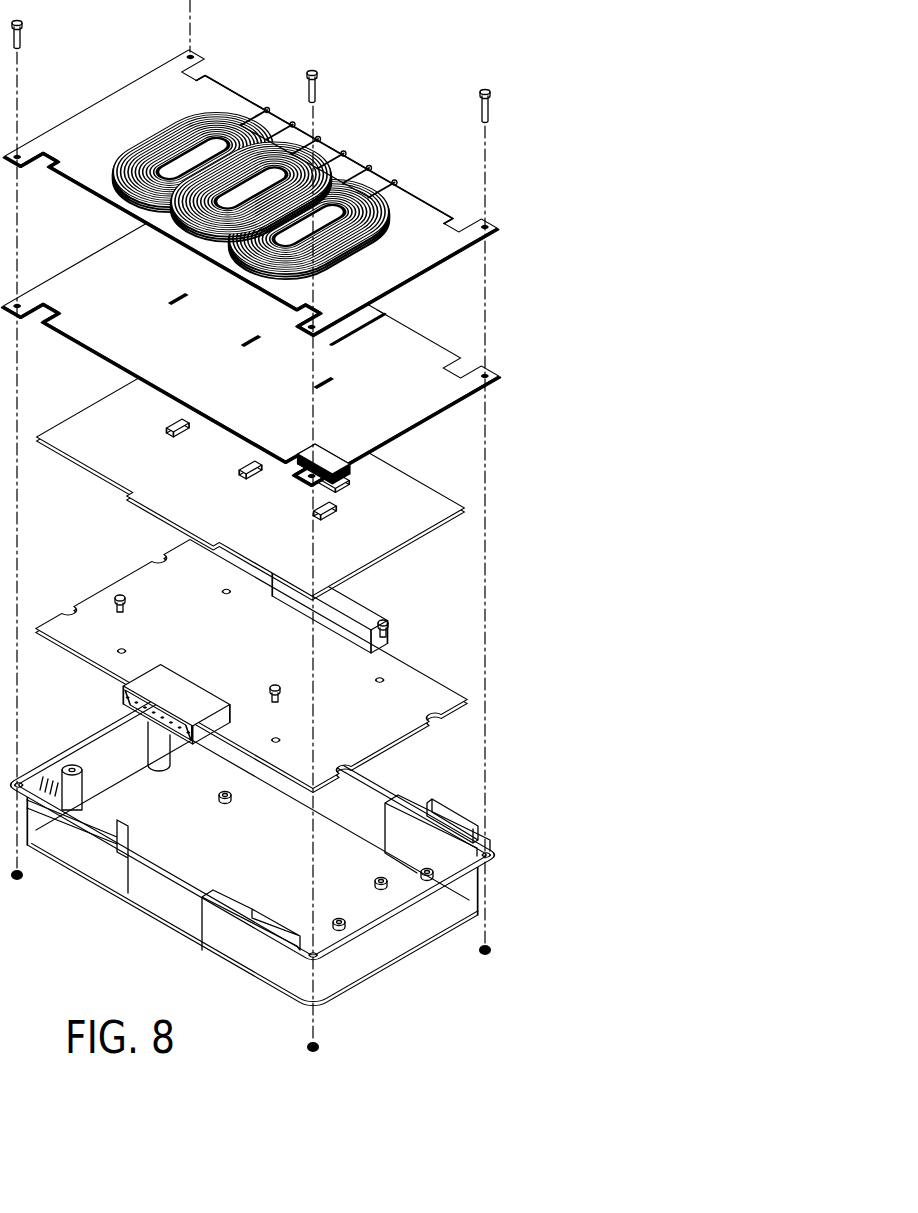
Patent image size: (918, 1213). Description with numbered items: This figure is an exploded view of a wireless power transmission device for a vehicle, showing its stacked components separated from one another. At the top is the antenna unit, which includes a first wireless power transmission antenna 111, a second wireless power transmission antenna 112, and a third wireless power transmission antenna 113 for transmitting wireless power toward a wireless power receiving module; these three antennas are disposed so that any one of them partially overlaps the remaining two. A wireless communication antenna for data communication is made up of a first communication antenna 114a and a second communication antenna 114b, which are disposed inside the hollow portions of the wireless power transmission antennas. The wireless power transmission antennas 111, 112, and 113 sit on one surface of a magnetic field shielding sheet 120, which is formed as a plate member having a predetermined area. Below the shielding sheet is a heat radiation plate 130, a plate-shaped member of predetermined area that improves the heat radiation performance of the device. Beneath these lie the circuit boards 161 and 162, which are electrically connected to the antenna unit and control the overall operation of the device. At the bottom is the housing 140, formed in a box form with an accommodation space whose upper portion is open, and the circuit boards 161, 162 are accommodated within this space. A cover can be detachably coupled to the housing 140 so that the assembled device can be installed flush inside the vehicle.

The first wireless power transmission antenna 111 is at (192, 131).
The second wireless power transmission antenna 112 is at (342, 207).
The third wireless power transmission antenna 113 is at (312, 137).
The first communication antenna 114a is at (180, 137).
The second communication antenna 114b is at (384, 199).
The magnetic field shielding sheet 120 is at (443, 263).
The heat radiation plate 130 is at (450, 410).
The circuit board 161 is at (450, 528).
The circuit board 162 is at (455, 722).
The housing 140 is at (463, 900).